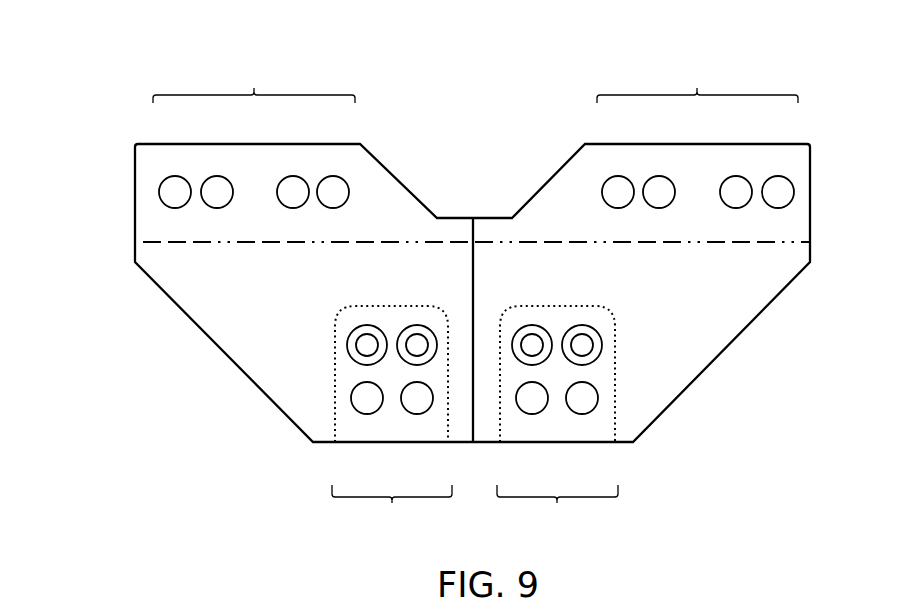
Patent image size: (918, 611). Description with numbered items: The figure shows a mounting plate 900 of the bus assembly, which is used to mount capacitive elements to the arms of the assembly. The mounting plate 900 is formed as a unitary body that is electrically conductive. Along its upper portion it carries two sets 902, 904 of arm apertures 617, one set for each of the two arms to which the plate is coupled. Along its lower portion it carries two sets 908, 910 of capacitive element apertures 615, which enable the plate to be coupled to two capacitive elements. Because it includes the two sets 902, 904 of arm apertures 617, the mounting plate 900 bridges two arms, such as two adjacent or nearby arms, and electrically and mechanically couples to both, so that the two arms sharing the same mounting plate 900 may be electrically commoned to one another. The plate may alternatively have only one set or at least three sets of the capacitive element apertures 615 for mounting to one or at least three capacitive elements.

The mounting plate 900 is at (118, 58).
The first set of arm apertures 902 is at (254, 81).
The second set of arm apertures 904 is at (697, 81).
The first set of capacitive element apertures 908 is at (392, 420).
The second set of capacitive element apertures 910 is at (557, 420).
The capacitive element apertures 615 is at (361, 330).
The arm apertures 617 is at (173, 170).